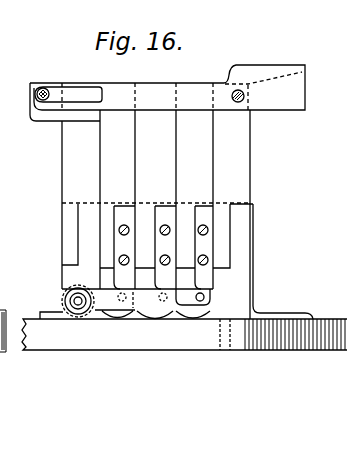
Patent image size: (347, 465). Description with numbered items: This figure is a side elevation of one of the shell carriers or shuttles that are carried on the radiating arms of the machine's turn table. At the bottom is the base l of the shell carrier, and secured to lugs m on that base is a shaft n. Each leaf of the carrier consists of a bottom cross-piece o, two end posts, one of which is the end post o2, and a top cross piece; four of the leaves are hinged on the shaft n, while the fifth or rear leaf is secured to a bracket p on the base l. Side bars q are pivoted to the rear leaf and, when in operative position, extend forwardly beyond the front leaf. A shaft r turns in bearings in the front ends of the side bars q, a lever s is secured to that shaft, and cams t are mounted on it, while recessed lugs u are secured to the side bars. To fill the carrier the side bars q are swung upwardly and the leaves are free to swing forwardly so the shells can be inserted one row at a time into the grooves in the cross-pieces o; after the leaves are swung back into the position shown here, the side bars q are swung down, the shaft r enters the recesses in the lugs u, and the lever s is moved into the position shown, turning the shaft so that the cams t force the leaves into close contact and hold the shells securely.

The side bars q is at (155, 92).
The cams t is at (31, 83).
The recessed lugs u is at (40, 119).
The lever s is at (75, 90).
The shaft r is at (38, 97).
The end post o2 is at (157, 215).
The bottom cross-piece o is at (156, 255).
The lugs m is at (60, 288).
The shaft n is at (62, 311).
The bracket p is at (256, 279).
The base l is at (173, 331).